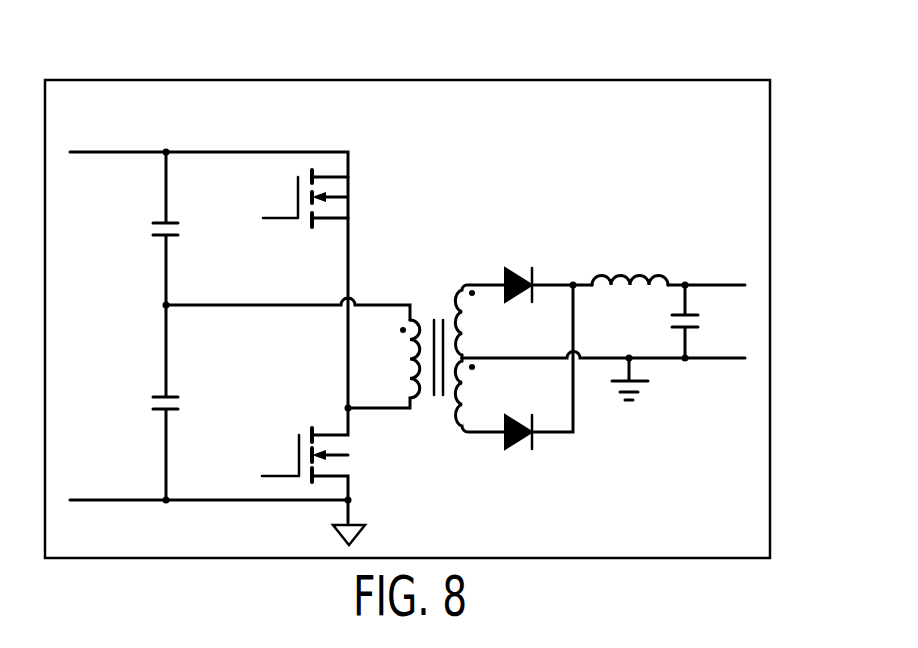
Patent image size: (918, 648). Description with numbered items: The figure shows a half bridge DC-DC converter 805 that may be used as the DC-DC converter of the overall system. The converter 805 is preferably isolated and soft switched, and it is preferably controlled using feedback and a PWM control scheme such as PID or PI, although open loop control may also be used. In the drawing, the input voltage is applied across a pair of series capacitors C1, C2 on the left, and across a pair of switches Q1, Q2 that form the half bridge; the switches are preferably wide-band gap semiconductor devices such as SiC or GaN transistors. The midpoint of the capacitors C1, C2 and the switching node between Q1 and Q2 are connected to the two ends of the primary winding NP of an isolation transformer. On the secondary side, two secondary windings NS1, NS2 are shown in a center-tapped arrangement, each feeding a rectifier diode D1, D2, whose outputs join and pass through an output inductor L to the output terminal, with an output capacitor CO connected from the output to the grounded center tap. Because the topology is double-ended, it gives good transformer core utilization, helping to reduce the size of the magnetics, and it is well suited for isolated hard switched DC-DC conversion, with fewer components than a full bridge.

The half bridge DC-DC converter 805 is at (725, 50).
The low-side switch transistor Q1 is at (305, 454).
The high-side switch transistor Q2 is at (305, 198).
The input divider capacitor C1 is at (183, 402).
The input divider capacitor C2 is at (183, 228).
The transformer primary winding NP is at (384, 364).
The transformer secondary winding 1 NS1 is at (483, 321).
The transformer secondary winding 2 NS2 is at (483, 395).
The rectifier diode D1 is at (522, 272).
The rectifier diode D2 is at (522, 446).
The output inductor L is at (630, 266).
The output capacitor CO is at (703, 321).